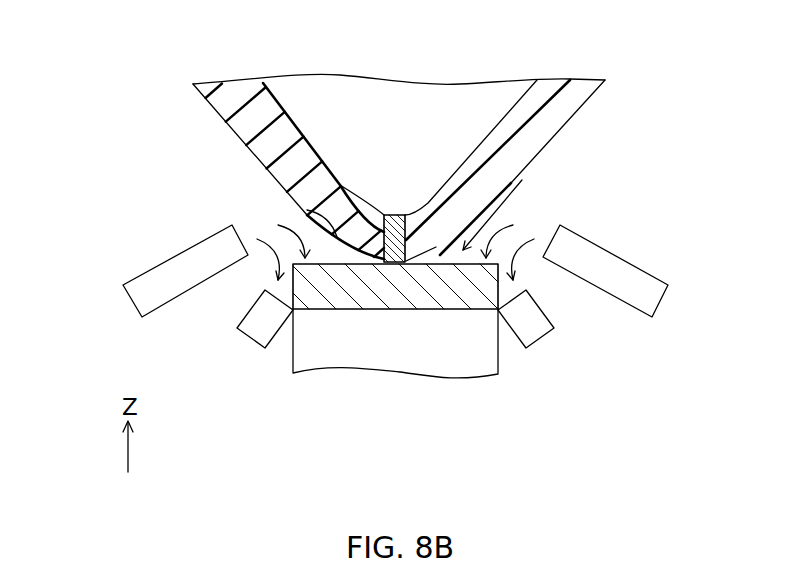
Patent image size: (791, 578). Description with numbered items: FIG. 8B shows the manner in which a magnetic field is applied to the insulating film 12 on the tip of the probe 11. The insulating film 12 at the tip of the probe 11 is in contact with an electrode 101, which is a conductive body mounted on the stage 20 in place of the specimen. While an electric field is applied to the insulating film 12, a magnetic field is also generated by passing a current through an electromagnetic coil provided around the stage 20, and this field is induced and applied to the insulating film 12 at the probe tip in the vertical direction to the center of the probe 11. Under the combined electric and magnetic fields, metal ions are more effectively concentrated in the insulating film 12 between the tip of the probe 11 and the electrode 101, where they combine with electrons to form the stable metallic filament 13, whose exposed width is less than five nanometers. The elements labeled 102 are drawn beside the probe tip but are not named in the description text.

The probe 11 is at (347, 127).
The insulating film 12 is at (291, 176).
The metallic filament 13 is at (391, 215).
The stage 20 is at (358, 352).
The electrode 101 is at (428, 300).
The side block 102 is at (143, 296).